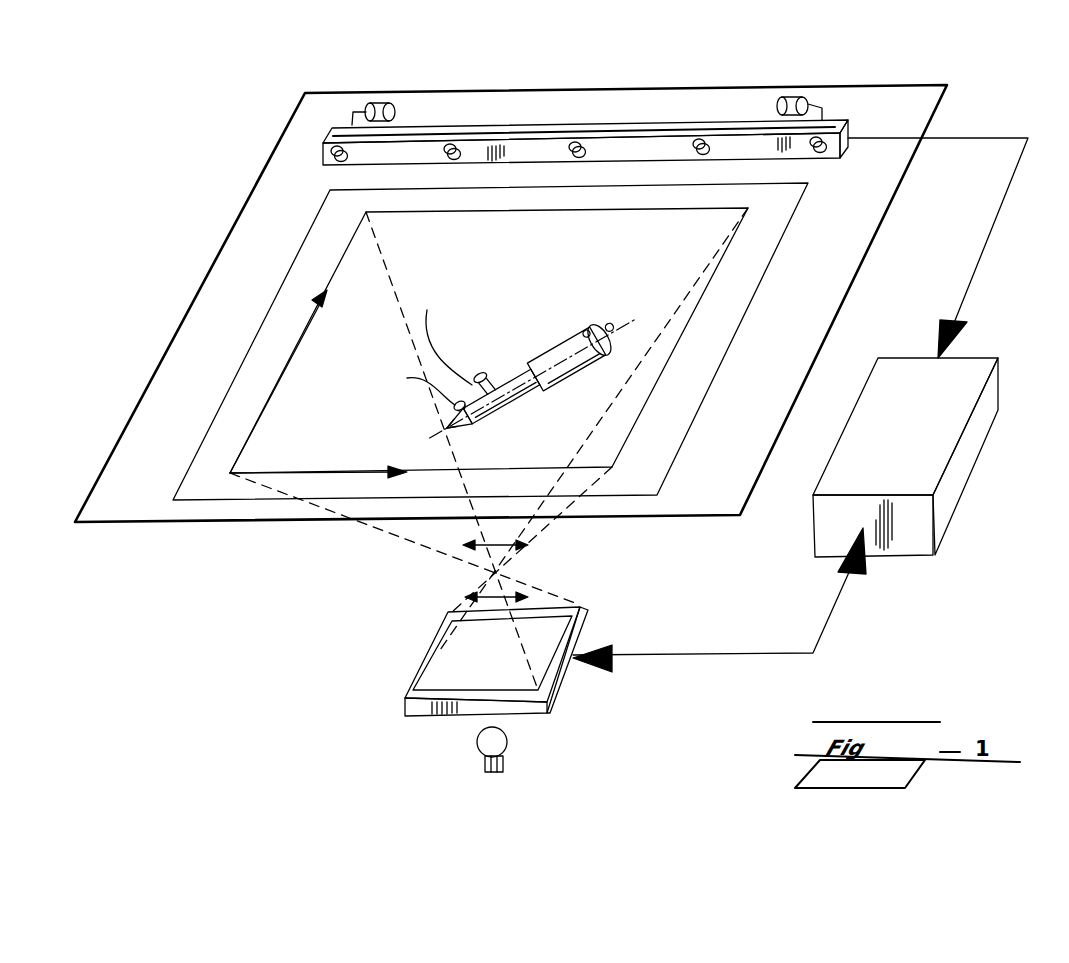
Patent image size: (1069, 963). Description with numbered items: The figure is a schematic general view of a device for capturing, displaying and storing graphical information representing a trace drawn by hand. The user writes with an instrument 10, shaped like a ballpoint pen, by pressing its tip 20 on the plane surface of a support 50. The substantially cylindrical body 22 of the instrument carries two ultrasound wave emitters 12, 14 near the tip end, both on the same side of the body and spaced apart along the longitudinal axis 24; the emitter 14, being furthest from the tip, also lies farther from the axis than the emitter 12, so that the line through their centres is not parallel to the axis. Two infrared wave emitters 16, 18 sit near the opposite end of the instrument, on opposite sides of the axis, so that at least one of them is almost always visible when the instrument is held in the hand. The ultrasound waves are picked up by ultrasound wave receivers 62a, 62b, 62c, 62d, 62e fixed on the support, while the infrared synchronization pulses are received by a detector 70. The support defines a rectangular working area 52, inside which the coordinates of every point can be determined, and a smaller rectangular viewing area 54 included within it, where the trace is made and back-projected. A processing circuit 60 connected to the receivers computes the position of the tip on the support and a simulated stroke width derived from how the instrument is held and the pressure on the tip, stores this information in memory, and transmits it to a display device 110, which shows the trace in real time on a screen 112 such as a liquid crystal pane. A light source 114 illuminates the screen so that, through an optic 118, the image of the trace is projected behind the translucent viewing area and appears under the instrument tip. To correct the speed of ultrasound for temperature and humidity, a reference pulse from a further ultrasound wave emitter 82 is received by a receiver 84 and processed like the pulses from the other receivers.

The instrument 10 is at (530, 367).
The ultrasound wave emitter 12 is at (455, 412).
The ultrasound wave emitter 14 is at (500, 377).
The infrared wave emitter 16 is at (588, 342).
The infrared wave emitter 18 is at (617, 326).
The tip 20 is at (450, 433).
The body 22 is at (560, 378).
The longitudinal axis 24 is at (645, 312).
The support 50 is at (823, 288).
The working area 52 is at (688, 388).
The viewing area 54 is at (705, 248).
The processing circuit 60 is at (963, 470).
The ultrasound wave receiver 62a is at (340, 164).
The ultrasound wave receiver 62b is at (454, 162).
The ultrasound wave receiver 62c is at (579, 160).
The ultrasound wave receiver 62d is at (703, 158).
The ultrasound wave receiver 62e is at (820, 156).
The detector 70 is at (519, 130).
The ultrasound wave emitter 82 is at (376, 103).
The receiver 84 is at (795, 97).
The display device 110 is at (524, 665).
The screen 112 is at (443, 670).
The light source 114 is at (475, 737).
The optic 118 is at (505, 548).